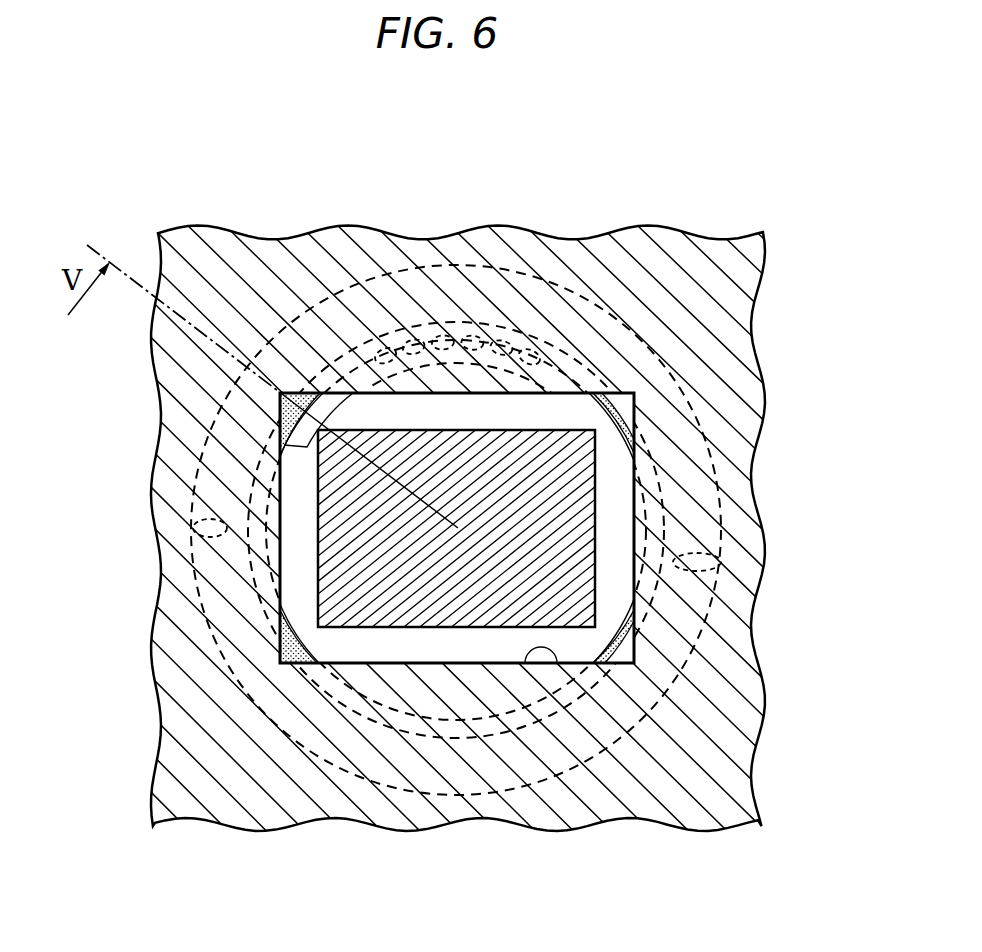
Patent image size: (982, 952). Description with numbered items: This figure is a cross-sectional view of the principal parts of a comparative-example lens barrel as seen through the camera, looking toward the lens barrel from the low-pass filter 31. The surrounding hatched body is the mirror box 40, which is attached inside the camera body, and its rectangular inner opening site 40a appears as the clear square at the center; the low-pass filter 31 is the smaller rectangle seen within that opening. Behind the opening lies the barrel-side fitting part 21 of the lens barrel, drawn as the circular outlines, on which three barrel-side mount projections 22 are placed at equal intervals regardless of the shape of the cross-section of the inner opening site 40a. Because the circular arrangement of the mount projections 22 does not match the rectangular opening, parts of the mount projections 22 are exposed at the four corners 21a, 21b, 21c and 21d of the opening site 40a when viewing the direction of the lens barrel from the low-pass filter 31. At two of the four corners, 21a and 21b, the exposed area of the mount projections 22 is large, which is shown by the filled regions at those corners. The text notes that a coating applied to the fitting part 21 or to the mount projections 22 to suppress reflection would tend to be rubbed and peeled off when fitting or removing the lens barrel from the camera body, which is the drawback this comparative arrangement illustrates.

The mirror box 40 is at (260, 278).
The inner opening site 40a is at (557, 663).
The low-pass filter 31 is at (560, 497).
The barrel-side fitting part 21 is at (557, 285).
The barrel-side mount projection 22 is at (390, 305).
The corner 21a is at (282, 405).
The corner 21b is at (282, 648).
The corner 21c is at (627, 638).
The corner 21d is at (604, 398).